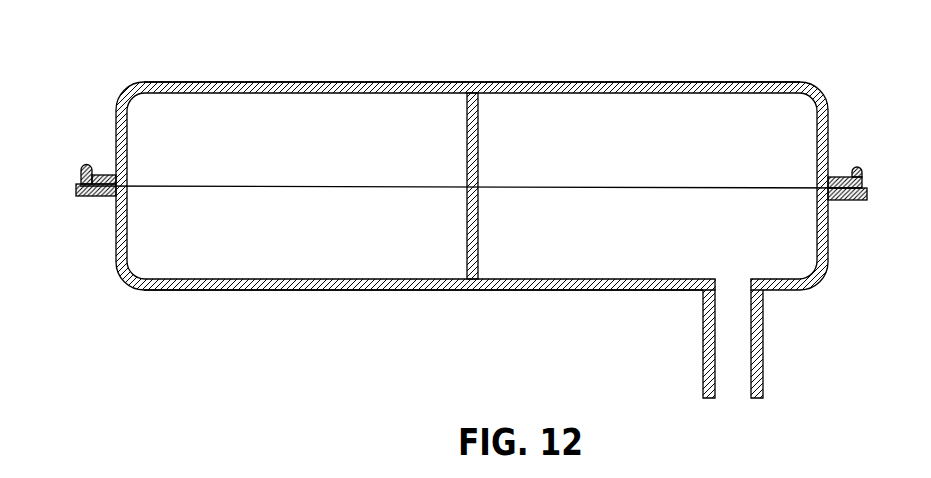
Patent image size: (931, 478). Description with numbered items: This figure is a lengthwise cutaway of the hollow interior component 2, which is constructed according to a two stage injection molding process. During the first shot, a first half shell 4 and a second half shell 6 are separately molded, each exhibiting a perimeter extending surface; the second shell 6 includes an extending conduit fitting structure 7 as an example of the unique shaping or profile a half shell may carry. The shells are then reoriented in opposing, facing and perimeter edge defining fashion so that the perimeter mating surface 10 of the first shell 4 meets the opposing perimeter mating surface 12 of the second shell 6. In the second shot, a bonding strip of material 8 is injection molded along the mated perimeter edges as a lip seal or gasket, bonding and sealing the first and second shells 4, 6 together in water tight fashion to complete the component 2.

The component 2 is at (325, 297).
The first half shell 4 is at (157, 82).
The second half shell 6 is at (200, 290).
The conduit fitting structure 7 is at (710, 338).
The second shot bonding strip 8 is at (80, 174).
The perimeter mating surface of first shell 10 is at (107, 175).
The perimeter mating surface of second shell 12 is at (79, 197).